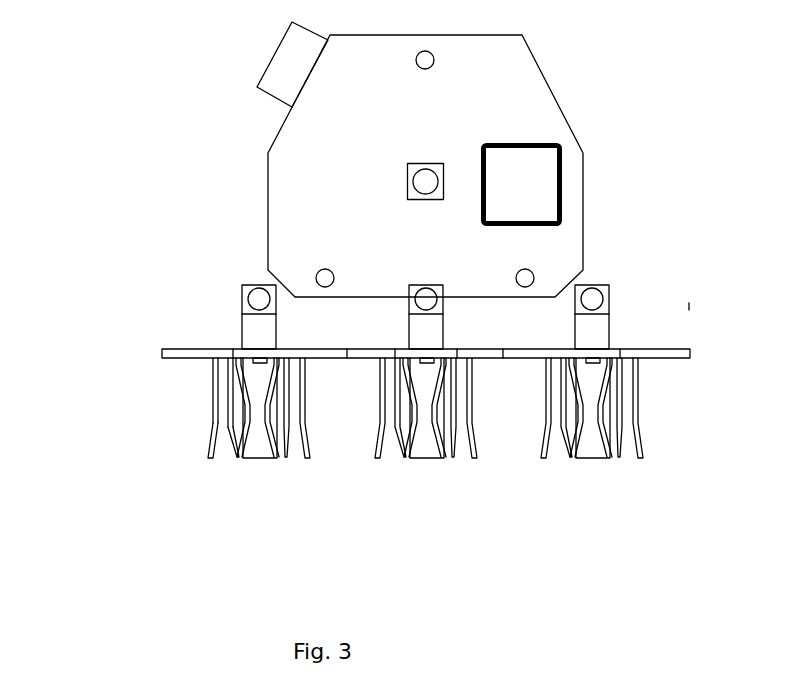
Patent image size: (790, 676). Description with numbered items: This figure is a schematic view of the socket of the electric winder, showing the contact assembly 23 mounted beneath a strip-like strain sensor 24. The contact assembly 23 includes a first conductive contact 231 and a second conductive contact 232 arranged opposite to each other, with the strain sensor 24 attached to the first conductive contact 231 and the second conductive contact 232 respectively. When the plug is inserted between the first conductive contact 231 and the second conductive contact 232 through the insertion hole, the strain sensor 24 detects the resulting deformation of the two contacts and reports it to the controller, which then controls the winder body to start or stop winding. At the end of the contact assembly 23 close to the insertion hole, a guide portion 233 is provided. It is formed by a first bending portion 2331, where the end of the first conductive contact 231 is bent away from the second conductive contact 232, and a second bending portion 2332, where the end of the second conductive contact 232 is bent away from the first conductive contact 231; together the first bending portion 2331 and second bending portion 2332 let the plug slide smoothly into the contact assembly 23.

The contact assembly 23 is at (181, 475).
The strain sensor 24 is at (218, 348).
The first conductive contact 231 is at (215, 413).
The second conductive contact 232 is at (228, 393).
The guide portion 233 is at (186, 508).
The first bending portion 2331 is at (208, 450).
The second bending portion 2332 is at (236, 460).